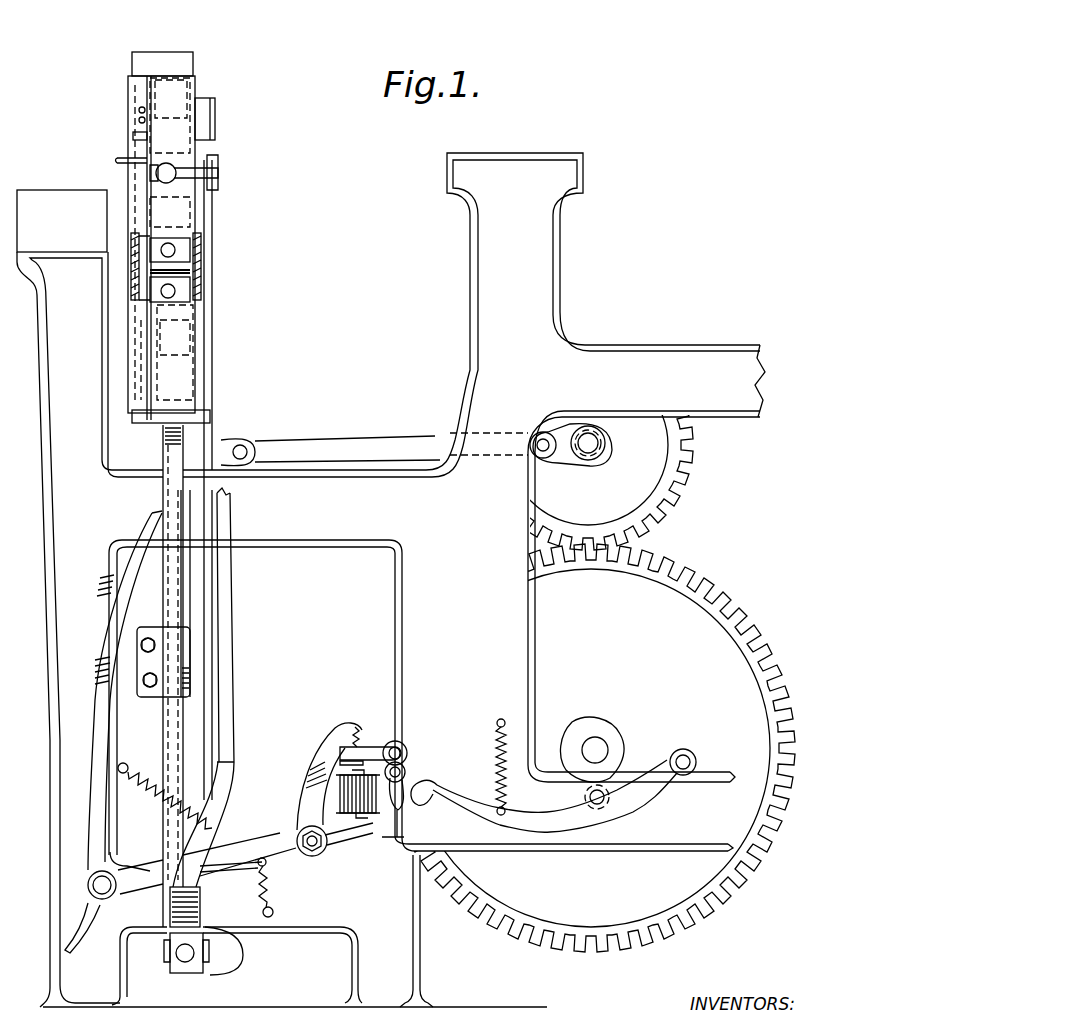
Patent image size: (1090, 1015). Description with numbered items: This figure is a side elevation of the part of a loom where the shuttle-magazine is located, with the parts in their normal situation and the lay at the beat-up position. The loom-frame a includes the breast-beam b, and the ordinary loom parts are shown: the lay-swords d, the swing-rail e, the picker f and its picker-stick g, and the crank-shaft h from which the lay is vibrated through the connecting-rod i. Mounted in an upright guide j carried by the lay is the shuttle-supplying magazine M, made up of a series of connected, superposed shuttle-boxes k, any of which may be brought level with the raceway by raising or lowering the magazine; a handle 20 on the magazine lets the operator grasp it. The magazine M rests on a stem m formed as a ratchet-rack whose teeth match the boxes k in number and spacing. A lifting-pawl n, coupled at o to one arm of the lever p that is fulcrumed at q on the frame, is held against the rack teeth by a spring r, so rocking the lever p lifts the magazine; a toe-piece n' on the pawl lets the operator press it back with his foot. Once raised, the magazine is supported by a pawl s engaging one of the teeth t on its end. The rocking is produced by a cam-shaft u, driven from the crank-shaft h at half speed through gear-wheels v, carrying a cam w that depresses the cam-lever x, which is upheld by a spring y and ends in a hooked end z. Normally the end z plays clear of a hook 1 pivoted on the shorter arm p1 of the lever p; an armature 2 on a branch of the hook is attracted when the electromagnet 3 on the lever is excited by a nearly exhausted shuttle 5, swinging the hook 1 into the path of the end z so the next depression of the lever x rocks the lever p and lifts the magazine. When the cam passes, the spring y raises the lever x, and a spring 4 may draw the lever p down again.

The shuttle-supplying magazine M is at (163, 446).
The handle 20 is at (172, 52).
The loom-frame a is at (391, 580).
The breast-beam b is at (62, 221).
The pawl s is at (125, 159).
The picker f is at (192, 170).
The teeth or shoulders t is at (139, 244).
The upright guide j is at (132, 266).
The shuttle-boxes k is at (202, 252).
The shuttle 5 is at (124, 312).
The picker-stick g is at (190, 481).
The lay-swords d is at (222, 413).
The stem m is at (165, 456).
The connecting-rod i is at (383, 442).
The crank-shaft h is at (590, 438).
The gear-wheels v is at (687, 513).
The cam w is at (572, 728).
The cam-shaft u is at (601, 745).
The spring y is at (493, 748).
The cam-lever x is at (547, 821).
The hooked end z is at (418, 778).
The shorter arm p1 is at (368, 746).
The armature 2 is at (352, 752).
The electromagnet 3 is at (358, 794).
The hook 1 is at (393, 824).
The lever p is at (300, 840).
The fulcrum q is at (318, 855).
The spring 4 is at (272, 887).
The swing-rail e is at (186, 963).
The lifting-pawl n is at (111, 690).
The toe-piece n' is at (61, 928).
The coupling point o is at (97, 880).
The spring r is at (150, 762).